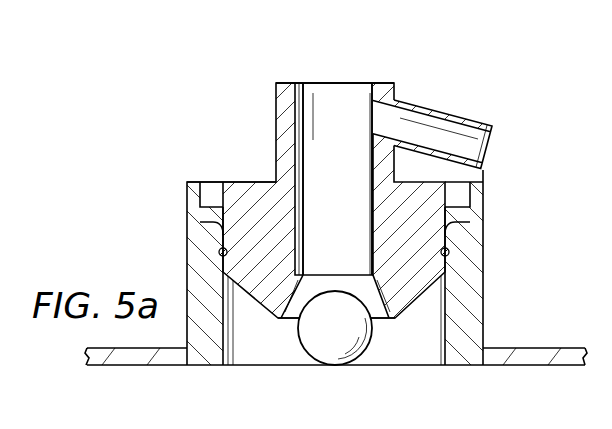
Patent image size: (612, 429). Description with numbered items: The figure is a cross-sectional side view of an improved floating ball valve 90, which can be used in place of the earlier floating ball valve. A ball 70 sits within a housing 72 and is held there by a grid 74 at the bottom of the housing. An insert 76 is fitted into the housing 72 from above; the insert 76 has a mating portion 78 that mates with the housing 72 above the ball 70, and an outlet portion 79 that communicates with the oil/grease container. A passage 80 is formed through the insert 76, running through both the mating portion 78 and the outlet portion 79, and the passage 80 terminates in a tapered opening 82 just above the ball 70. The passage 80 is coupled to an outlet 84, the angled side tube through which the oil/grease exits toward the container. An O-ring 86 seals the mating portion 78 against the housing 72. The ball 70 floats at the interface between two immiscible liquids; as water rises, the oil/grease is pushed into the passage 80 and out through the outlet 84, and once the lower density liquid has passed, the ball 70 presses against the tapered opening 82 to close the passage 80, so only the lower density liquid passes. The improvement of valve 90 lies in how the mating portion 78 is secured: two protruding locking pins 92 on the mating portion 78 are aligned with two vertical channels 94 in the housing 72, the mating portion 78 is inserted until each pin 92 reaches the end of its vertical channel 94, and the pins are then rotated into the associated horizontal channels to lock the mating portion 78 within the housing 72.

The ball 70 is at (299, 330).
The housing 72 is at (484, 318).
The grid 74 is at (292, 366).
The insert 76 is at (365, 68).
The mating portion 78 is at (266, 180).
The outlet portion 79 is at (276, 97).
The passage 80 is at (334, 100).
The tapered opening 82 is at (381, 325).
The outlet 84 is at (451, 113).
The O-ring 86 is at (219, 253).
The improved floating ball valve 90 is at (207, 154).
The locking pin 92 is at (213, 229).
The vertical channel 94 is at (204, 195).